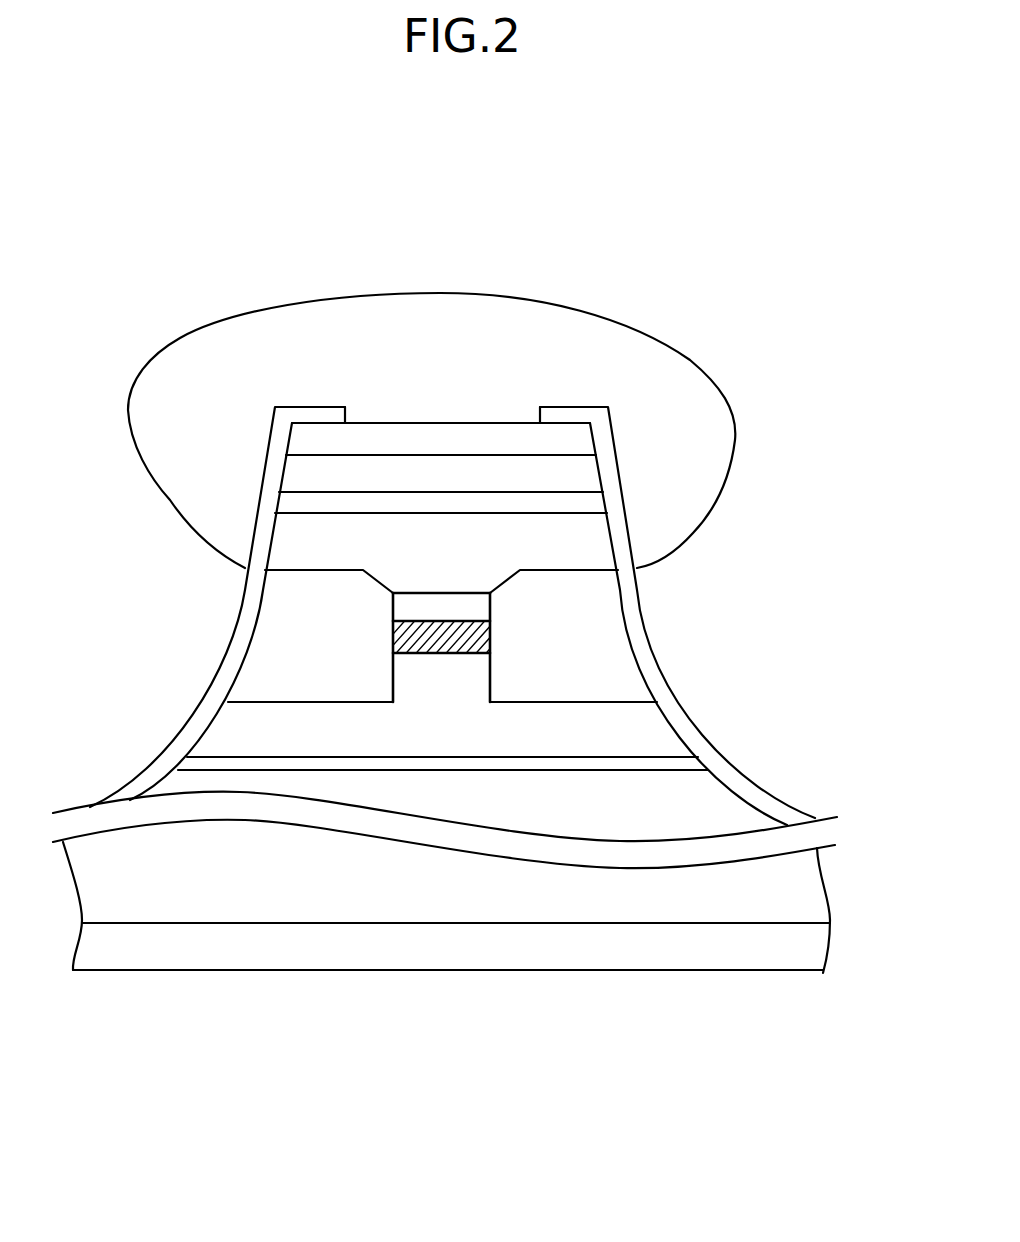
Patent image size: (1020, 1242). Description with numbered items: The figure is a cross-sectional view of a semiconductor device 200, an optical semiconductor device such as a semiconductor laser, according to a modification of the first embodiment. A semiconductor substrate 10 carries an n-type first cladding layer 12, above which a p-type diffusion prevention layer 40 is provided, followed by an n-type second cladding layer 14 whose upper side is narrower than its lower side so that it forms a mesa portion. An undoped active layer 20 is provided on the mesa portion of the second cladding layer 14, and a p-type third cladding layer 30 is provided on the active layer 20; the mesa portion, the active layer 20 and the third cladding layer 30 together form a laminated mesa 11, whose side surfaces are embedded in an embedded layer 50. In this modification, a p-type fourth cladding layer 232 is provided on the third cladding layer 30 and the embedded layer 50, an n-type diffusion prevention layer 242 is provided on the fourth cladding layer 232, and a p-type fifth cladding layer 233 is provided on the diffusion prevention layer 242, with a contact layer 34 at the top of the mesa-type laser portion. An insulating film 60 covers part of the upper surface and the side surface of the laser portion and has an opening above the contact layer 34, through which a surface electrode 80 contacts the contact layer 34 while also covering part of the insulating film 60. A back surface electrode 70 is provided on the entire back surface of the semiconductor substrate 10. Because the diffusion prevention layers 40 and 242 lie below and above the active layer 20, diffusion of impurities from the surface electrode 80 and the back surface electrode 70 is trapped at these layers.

The semiconductor device 200 is at (475, 644).
The surface electrode 80 is at (442, 318).
The insulating film 60 is at (570, 415).
The contact layer 34 is at (570, 443).
The fifth cladding layer 233 is at (575, 482).
The diffusion prevention layer 242 is at (300, 505).
The fourth cladding layer 232 is at (567, 547).
The third cladding layer 30 is at (477, 611).
The active layer 20 is at (477, 642).
The laminated mesa 11 is at (391, 615).
The embedded layer 50 is at (298, 658).
The second cladding layer 14 is at (643, 730).
The diffusion prevention layer 40 is at (190, 760).
The first cladding layer 12 is at (715, 803).
The semiconductor substrate 10 is at (802, 895).
The back surface electrode 70 is at (452, 972).